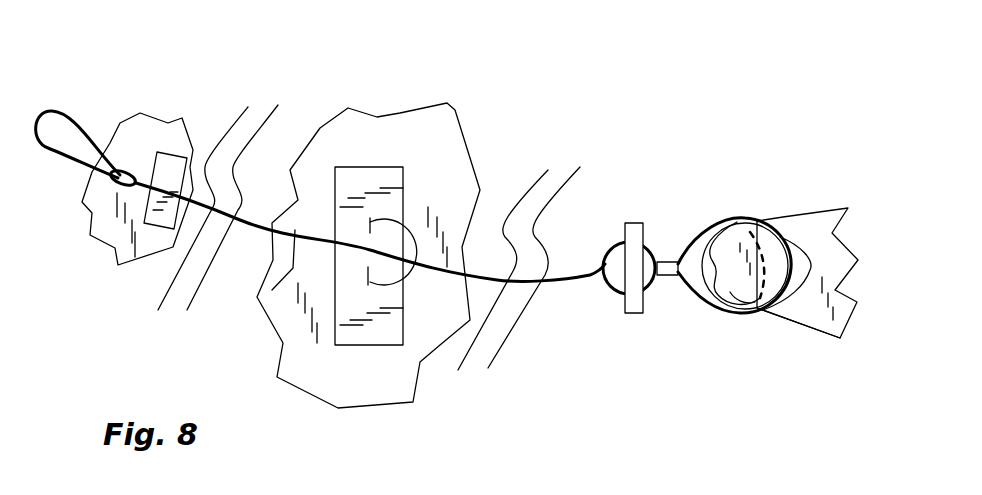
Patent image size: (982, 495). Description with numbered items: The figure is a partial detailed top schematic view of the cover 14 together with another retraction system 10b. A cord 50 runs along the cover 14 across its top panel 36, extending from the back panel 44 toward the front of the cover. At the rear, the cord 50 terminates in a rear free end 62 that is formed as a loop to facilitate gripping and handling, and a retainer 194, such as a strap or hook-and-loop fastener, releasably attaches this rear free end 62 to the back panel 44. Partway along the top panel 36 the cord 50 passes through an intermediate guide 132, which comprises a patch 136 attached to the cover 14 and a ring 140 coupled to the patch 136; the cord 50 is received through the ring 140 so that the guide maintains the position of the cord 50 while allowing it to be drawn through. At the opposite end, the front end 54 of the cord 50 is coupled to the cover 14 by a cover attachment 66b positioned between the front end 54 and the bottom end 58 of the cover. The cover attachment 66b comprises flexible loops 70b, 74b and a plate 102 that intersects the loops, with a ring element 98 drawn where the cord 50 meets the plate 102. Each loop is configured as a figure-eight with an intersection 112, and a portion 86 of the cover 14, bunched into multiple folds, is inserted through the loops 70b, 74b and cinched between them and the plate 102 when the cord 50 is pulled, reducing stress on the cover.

The retraction system 10b is at (505, 148).
The cover 14 is at (338, 128).
The top panel 36 is at (448, 143).
The back panel 44 is at (82, 283).
The cord 50 is at (275, 288).
The front end 54 is at (560, 280).
The bottom end 58 is at (840, 333).
The rear free end 62 is at (63, 162).
The cover attachment 66b is at (736, 186).
The loop 70b is at (780, 217).
The loop 74b is at (717, 221).
The portion of the cover 86 is at (730, 292).
The ring 98 is at (672, 305).
The plate 102 is at (633, 222).
The intersection 112 is at (667, 261).
The intermediate guide 132 is at (380, 188).
The patch 136 is at (370, 337).
The ring 140 is at (407, 275).
The retainer 194 is at (173, 163).